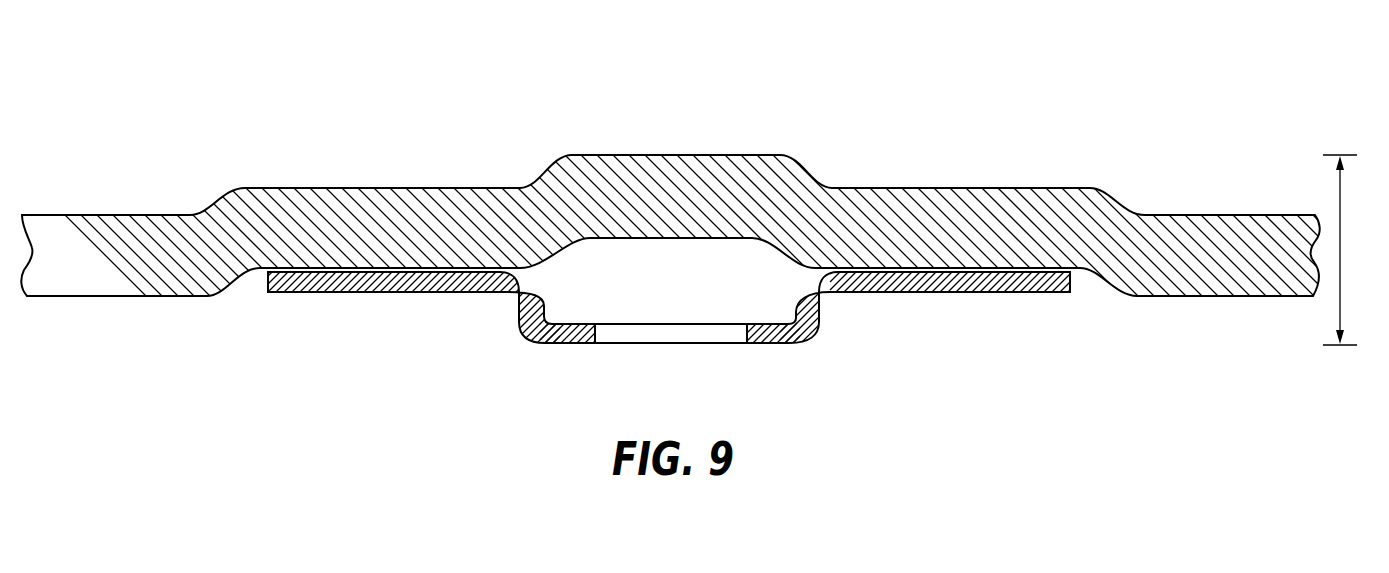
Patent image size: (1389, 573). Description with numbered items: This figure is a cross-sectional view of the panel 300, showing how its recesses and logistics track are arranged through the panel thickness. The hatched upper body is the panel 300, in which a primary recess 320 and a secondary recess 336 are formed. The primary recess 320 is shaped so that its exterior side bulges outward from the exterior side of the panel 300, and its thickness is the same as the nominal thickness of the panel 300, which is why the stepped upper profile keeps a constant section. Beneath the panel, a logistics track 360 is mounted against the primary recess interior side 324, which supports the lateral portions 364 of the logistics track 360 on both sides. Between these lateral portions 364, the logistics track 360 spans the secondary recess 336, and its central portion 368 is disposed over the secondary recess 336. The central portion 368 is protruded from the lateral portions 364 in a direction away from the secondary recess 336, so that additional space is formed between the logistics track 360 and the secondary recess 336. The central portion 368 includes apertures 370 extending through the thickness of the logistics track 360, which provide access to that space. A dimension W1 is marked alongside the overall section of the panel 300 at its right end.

The panel 300 is at (694, 218).
The primary recess 320 is at (258, 289).
The primary recess interior side 324 is at (355, 273).
The secondary recess 336 is at (731, 272).
The logistics track 360 is at (699, 345).
The lateral portions 364 is at (425, 292).
The central portion 368 is at (555, 343).
The apertures 370 is at (668, 343).
The width W1 is at (1352, 247).